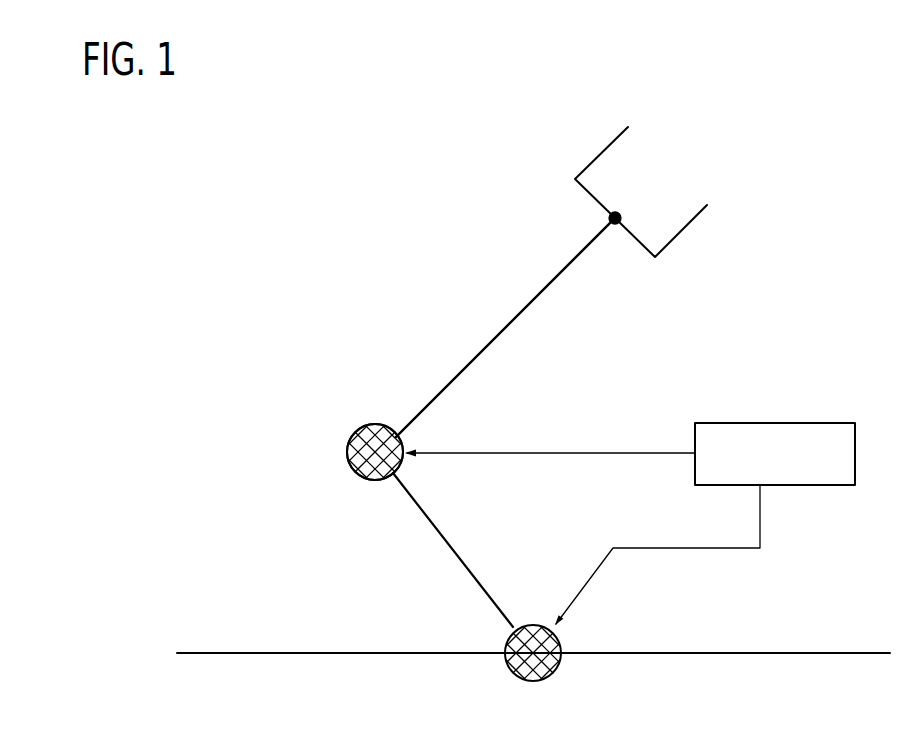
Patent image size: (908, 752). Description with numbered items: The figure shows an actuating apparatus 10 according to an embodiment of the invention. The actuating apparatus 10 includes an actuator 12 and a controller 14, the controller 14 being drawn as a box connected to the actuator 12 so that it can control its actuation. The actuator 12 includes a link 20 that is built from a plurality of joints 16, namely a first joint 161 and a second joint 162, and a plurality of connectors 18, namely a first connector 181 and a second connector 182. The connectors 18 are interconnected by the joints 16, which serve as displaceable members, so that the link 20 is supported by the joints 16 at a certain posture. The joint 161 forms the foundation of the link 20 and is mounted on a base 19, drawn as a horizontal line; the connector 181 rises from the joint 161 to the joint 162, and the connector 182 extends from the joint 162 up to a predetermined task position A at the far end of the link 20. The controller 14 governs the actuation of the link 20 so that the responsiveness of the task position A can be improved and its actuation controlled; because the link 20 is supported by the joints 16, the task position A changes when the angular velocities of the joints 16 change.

The actuating apparatus 10 is at (378, 145).
The actuator 12 is at (466, 322).
The controller 14 is at (787, 423).
The joints 16 is at (490, 566).
The joint 161 is at (540, 680).
The joint 162 is at (358, 477).
The connectors 18 is at (504, 426).
The connector 181 is at (473, 578).
The connector 182 is at (560, 266).
The base 19 is at (822, 652).
The link 20 is at (409, 392).
The task position A is at (641, 192).